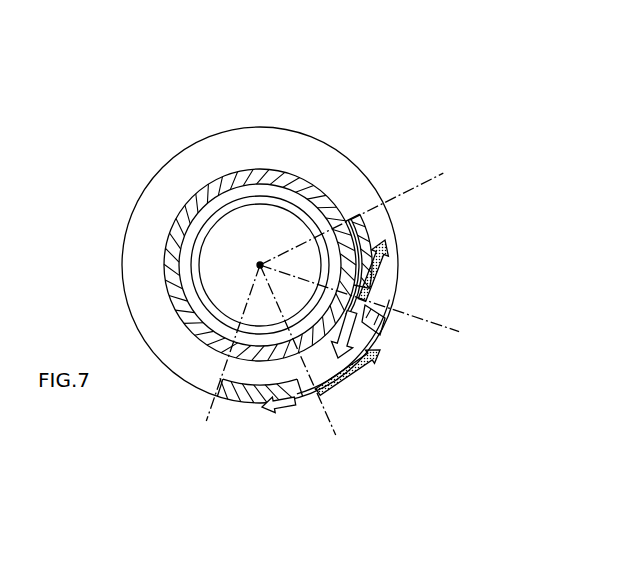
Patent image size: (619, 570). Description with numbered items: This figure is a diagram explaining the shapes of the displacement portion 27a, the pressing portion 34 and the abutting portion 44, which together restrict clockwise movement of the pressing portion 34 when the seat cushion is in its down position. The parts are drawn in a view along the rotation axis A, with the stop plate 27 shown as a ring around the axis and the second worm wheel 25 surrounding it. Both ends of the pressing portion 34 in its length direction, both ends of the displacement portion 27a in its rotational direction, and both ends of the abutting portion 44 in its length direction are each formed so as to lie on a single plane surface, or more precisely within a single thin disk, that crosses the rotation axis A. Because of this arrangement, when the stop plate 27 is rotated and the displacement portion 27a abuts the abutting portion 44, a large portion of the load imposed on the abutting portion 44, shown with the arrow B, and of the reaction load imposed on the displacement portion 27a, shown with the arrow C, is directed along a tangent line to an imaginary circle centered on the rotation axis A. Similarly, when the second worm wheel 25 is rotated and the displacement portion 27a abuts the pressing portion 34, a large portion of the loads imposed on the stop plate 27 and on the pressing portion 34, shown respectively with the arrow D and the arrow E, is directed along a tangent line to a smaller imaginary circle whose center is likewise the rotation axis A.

The second worm wheel 25 is at (242, 150).
The stop plate 27 is at (190, 200).
The displacement portion 27a is at (380, 345).
The pressing portion 34 is at (360, 218).
The abutting portion 44 is at (229, 403).
The rotation axis A is at (332, 304).
The arrow B is at (307, 402).
The arrow C is at (352, 380).
The arrow D is at (385, 325).
The arrow E is at (378, 268).